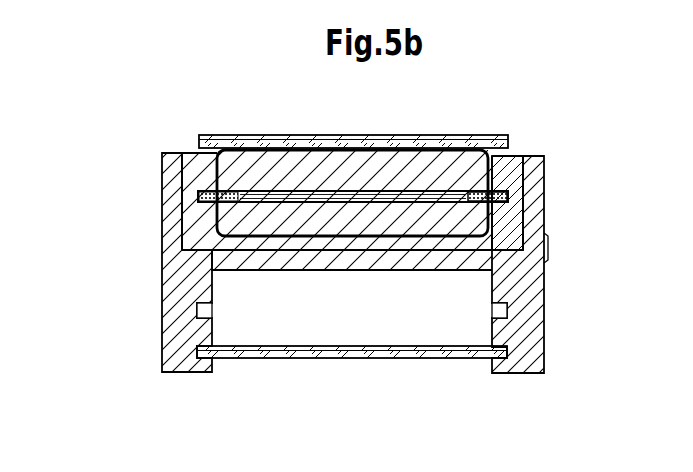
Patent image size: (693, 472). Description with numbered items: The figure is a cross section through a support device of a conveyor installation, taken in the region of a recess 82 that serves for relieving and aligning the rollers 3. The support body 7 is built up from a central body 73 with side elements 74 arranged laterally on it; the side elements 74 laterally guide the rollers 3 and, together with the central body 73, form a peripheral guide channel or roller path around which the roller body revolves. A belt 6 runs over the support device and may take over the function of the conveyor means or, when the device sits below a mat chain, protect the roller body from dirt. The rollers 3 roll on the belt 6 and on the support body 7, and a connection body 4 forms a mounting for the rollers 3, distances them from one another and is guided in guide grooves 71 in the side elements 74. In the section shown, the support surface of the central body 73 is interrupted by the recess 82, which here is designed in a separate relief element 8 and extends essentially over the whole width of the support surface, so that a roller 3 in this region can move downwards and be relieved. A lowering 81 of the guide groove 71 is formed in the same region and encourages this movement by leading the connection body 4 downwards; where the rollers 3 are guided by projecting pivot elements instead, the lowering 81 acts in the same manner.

The rollers 3 is at (417, 163).
The connection body 4 is at (507, 198).
The belt 6 is at (262, 140).
The support body 7 is at (546, 288).
The relief element 8 is at (512, 170).
The guide groove 71 is at (500, 311).
The central body 73 is at (227, 255).
The side element 74 is at (175, 330).
The lowering 81 is at (509, 201).
The recess 82 is at (333, 231).